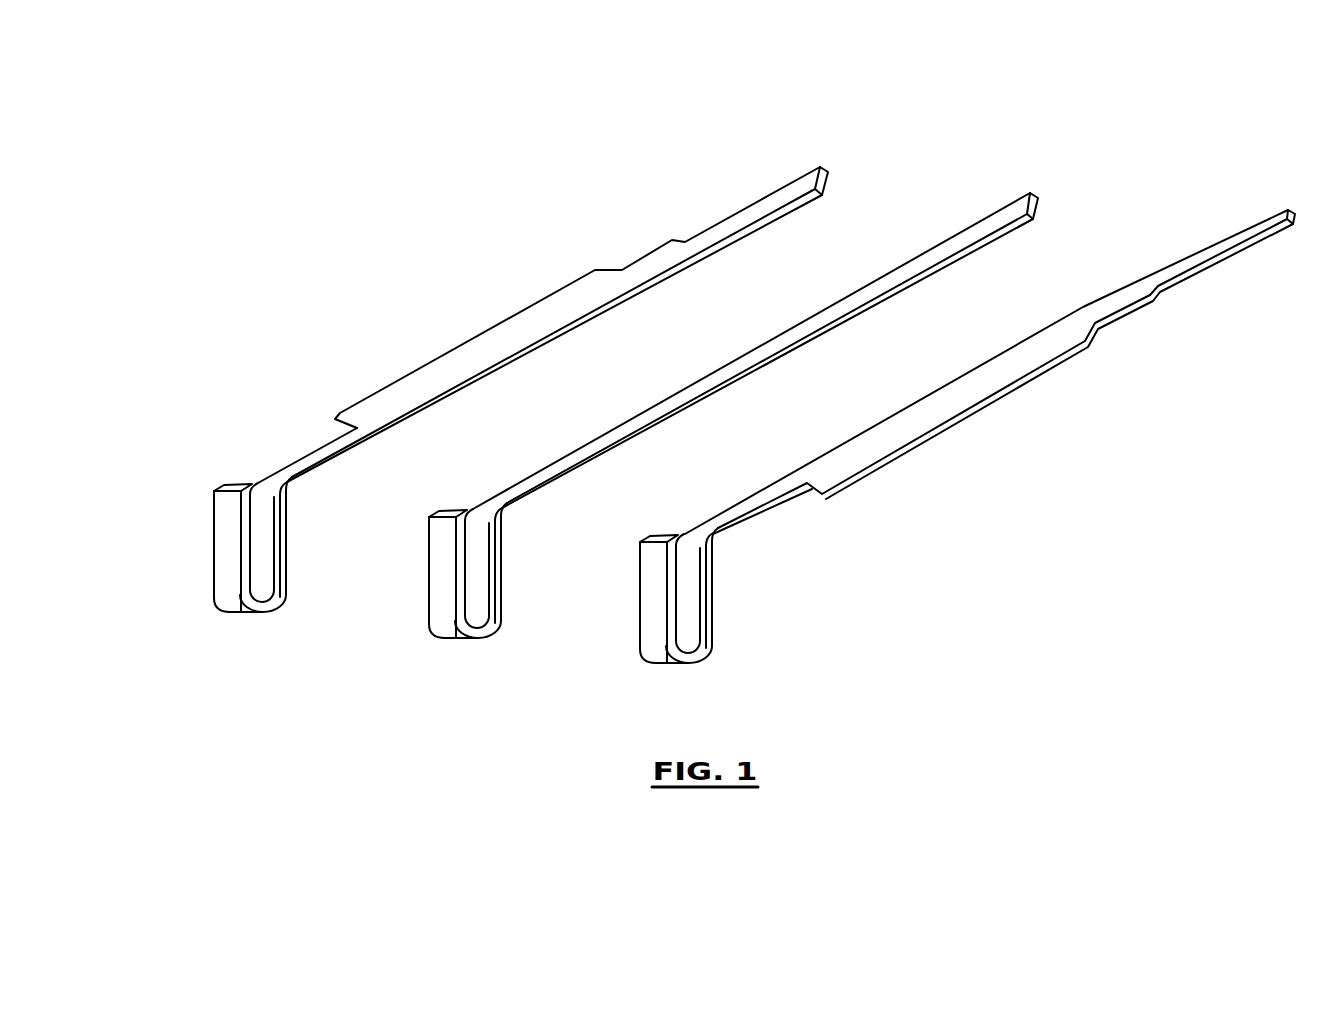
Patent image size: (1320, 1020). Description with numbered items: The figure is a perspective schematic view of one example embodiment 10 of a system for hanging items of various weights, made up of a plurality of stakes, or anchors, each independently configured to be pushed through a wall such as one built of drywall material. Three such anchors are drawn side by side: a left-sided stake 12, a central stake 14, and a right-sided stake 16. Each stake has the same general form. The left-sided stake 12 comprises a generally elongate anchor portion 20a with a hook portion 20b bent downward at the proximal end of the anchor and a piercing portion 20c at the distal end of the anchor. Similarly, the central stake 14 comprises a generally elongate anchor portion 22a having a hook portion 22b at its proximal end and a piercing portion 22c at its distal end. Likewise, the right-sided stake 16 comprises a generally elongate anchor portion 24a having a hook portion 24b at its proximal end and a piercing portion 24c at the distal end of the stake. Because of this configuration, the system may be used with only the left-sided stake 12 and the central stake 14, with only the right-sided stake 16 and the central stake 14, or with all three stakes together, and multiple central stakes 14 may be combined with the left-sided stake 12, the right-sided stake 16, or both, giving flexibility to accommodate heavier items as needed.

The hanging system embodiment 10 is at (406, 241).
The left-sided stake 12 is at (405, 369).
The central stake 14 is at (569, 453).
The right-sided stake 16 is at (775, 510).
The anchor portion 20a is at (577, 287).
The hook portion 20b is at (228, 540).
The piercing portion 20c is at (806, 172).
The anchor portion 22a is at (870, 297).
The hook portion 22b is at (441, 585).
The piercing portion 22c is at (1021, 189).
The anchor portion 24a is at (1077, 325).
The hook portion 24b is at (657, 617).
The piercing portion 24c is at (1268, 200).